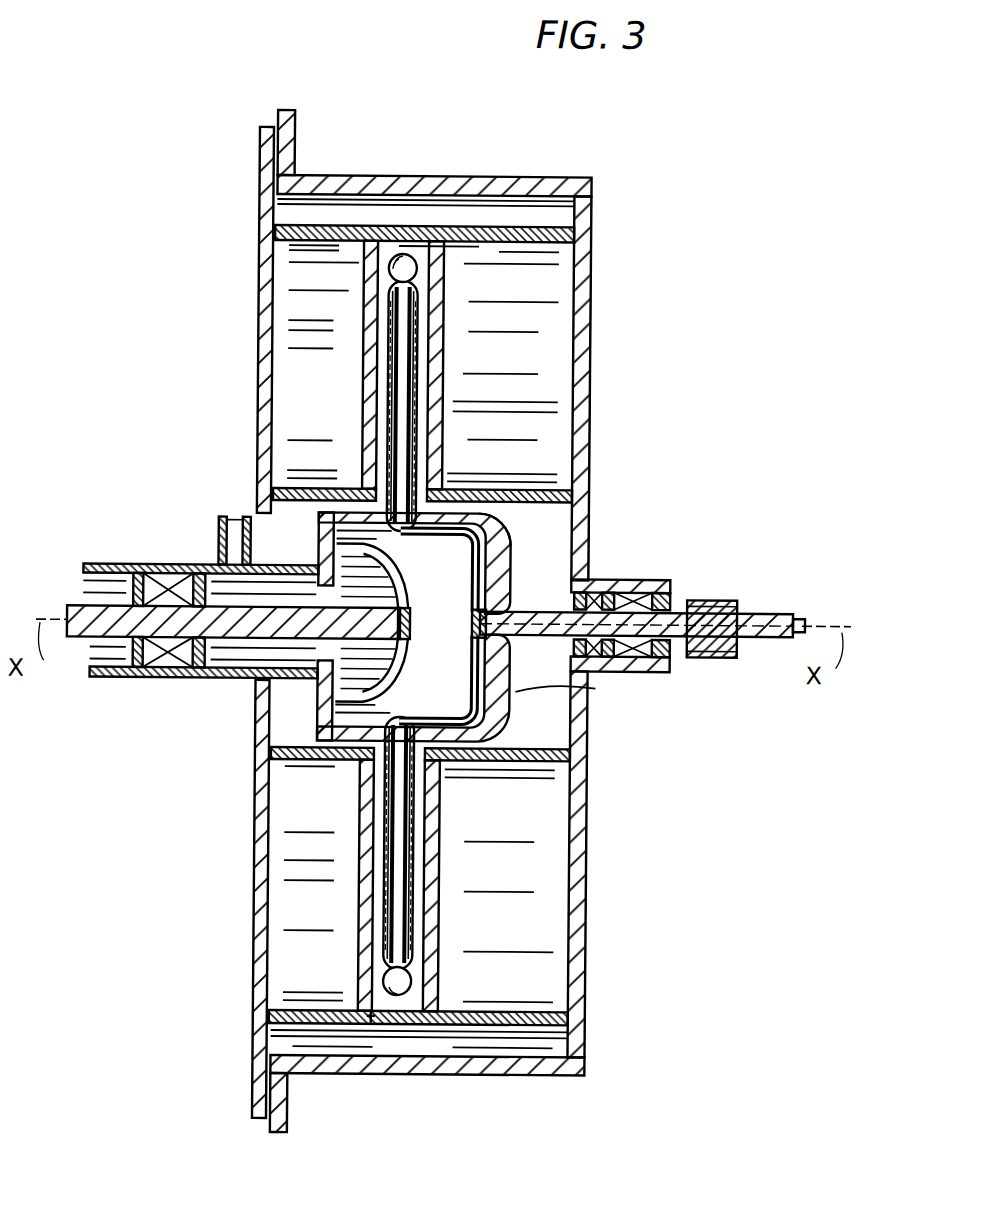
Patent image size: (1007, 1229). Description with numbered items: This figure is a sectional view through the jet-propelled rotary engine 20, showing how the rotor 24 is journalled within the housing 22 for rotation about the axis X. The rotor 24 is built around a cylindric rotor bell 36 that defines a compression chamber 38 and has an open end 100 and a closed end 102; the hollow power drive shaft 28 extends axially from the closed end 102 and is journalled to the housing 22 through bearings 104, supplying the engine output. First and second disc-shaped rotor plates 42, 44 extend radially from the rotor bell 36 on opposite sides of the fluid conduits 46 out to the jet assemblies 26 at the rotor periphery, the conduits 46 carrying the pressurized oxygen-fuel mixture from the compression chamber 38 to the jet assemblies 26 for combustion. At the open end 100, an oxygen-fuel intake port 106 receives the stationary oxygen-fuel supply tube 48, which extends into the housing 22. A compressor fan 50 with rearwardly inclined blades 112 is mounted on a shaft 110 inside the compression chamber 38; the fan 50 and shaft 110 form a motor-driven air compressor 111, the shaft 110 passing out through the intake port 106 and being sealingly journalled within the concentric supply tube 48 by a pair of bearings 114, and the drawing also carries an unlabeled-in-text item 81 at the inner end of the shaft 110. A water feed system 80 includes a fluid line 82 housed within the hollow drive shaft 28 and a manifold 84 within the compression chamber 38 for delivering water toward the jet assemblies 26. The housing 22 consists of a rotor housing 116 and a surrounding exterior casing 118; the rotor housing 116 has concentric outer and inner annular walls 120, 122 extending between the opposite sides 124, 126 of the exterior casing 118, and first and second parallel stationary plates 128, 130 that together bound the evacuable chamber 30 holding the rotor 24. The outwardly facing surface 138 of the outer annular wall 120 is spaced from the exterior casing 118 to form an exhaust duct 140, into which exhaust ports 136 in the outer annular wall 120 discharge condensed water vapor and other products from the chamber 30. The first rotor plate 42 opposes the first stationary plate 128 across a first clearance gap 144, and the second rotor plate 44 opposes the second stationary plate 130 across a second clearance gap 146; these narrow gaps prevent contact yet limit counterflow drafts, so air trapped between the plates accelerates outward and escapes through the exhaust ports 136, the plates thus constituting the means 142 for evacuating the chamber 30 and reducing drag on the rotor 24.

The jet-propelled rotary engine 20 is at (712, 332).
The housing 22 is at (597, 282).
The rotor 24 is at (476, 754).
The jet assemblies 26 is at (412, 272).
The power drive shaft 28 is at (792, 572).
The chamber 30 is at (378, 263).
The rotor bell 36 is at (445, 512).
The compression chamber 38 is at (492, 522).
The first disc-shaped rotor plate 42 is at (392, 312).
The second disc-shaped rotor plate 44 is at (421, 332).
The fluid conduits 46 is at (421, 364).
The oxygen-fuel supply tube 48 is at (240, 672).
The compressor fan 50 is at (410, 658).
The water feed system 80 is at (512, 578).
The shaft end cap 81 is at (466, 621).
The fluid line 82 is at (675, 608).
The manifold 84 is at (478, 614).
The open end 100 is at (324, 710).
The closed end 102 is at (507, 673).
The bearings 104 is at (642, 577).
The oxygen-fuel intake port 106 is at (335, 592).
The shaft 110 is at (106, 625).
The motor-driven air compressor 111 is at (359, 688).
The blades 112 is at (365, 770).
The bearings 114 is at (202, 566).
The rotor housing 116 is at (444, 404).
The exterior casing 118 is at (438, 188).
The outer annular wall 120 is at (580, 262).
The inner annular wall 122 is at (283, 482).
The first side of exterior casing 124 is at (262, 338).
The second side of exterior casing 126 is at (582, 456).
The first stationary plate 128 is at (366, 418).
The second stationary plate 130 is at (444, 462).
The exhaust ports 136 is at (380, 1024).
The outwardly facing surface 138 is at (295, 226).
The exhaust duct 140 is at (592, 182).
The means for evacuating 142 is at (348, 824).
The first clearance gap 144 is at (378, 388).
The second clearance gap 146 is at (444, 381).